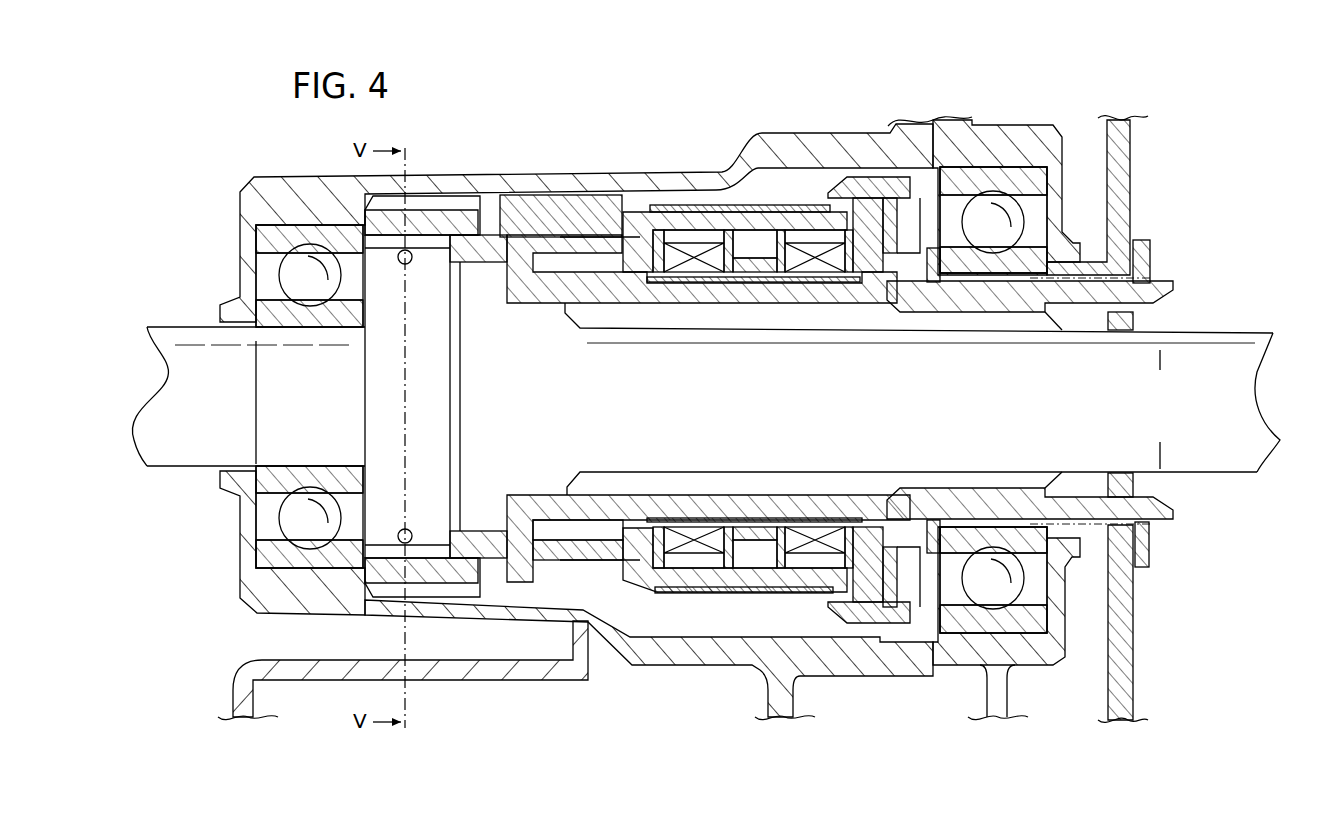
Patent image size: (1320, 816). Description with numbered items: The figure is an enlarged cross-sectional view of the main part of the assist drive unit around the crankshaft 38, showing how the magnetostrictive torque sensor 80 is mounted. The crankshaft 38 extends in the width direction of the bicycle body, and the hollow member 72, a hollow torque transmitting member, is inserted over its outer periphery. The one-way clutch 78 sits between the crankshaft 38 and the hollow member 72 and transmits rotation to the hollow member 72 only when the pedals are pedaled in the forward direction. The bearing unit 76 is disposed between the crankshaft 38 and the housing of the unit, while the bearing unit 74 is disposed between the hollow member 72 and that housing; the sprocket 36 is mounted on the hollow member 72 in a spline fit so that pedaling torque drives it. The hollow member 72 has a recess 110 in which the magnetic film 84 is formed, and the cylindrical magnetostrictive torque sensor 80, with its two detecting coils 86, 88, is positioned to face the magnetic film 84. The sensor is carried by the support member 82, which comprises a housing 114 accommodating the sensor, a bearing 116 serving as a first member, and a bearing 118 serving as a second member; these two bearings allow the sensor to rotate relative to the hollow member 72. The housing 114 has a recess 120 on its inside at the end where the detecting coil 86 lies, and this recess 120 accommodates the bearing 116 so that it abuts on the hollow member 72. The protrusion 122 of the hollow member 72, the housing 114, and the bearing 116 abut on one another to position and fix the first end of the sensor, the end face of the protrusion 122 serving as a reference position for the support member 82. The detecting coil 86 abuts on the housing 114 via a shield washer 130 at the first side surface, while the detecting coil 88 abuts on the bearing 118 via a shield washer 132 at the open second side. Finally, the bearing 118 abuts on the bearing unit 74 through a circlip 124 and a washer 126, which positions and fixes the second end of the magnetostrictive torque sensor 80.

The sprocket 36 is at (1131, 162).
The crankshaft 38 is at (1233, 343).
The hollow member 72 is at (475, 218).
The bearing unit 74 is at (1027, 220).
The bearing unit 76 is at (276, 276).
The one-way clutch 78 is at (425, 255).
The magnetostrictive torque sensor 80 is at (694, 254).
The support member 82 is at (806, 197).
The magnetic film 84 is at (657, 284).
The detecting coil 86 is at (700, 270).
The detecting coil 88 is at (810, 272).
The recess 110 is at (757, 274).
The housing 114 is at (858, 183).
The bearing 116 is at (552, 268).
The bearing 118 is at (872, 265).
The recess 120 is at (603, 237).
The protrusion 122 is at (522, 237).
The circlip 124 is at (935, 275).
The washer 126 is at (912, 283).
The shield washer 130 is at (646, 226).
The shield washer 132 is at (856, 280).